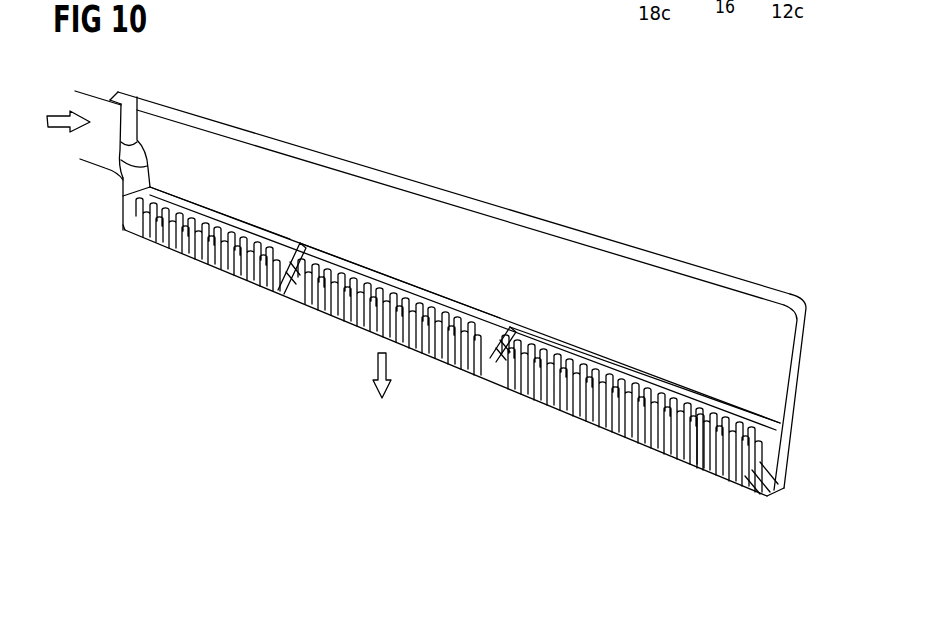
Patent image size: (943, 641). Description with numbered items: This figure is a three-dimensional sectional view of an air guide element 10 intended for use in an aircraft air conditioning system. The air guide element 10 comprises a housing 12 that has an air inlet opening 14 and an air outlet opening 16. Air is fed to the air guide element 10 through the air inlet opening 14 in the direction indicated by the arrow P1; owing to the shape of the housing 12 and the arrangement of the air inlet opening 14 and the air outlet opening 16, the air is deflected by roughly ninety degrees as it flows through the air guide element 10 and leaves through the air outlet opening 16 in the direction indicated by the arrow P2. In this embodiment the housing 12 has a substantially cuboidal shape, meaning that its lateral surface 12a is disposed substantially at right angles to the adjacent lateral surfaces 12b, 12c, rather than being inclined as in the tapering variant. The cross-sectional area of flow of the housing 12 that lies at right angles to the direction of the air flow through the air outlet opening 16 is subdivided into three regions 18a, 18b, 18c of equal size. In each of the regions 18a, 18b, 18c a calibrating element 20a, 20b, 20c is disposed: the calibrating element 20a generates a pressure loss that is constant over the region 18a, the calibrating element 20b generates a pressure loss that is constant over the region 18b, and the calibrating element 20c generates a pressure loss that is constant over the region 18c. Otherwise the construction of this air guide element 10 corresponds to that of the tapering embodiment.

The air guide element 10 is at (427, 296).
The housing 12 is at (187, 142).
The lateral surface 12a is at (446, 197).
The lateral surface 12b is at (121, 192).
The lateral surface 12c is at (783, 457).
The air inlet opening 14 is at (93, 143).
The air outlet opening 16 is at (700, 470).
The region 18a is at (188, 266).
The region 18b is at (356, 342).
The region 18c is at (611, 442).
The calibrating element 20a is at (200, 207).
The calibrating element 20b is at (407, 293).
The calibrating element 20c is at (600, 357).
The arrow P1 is at (64, 102).
The arrow P2 is at (390, 368).